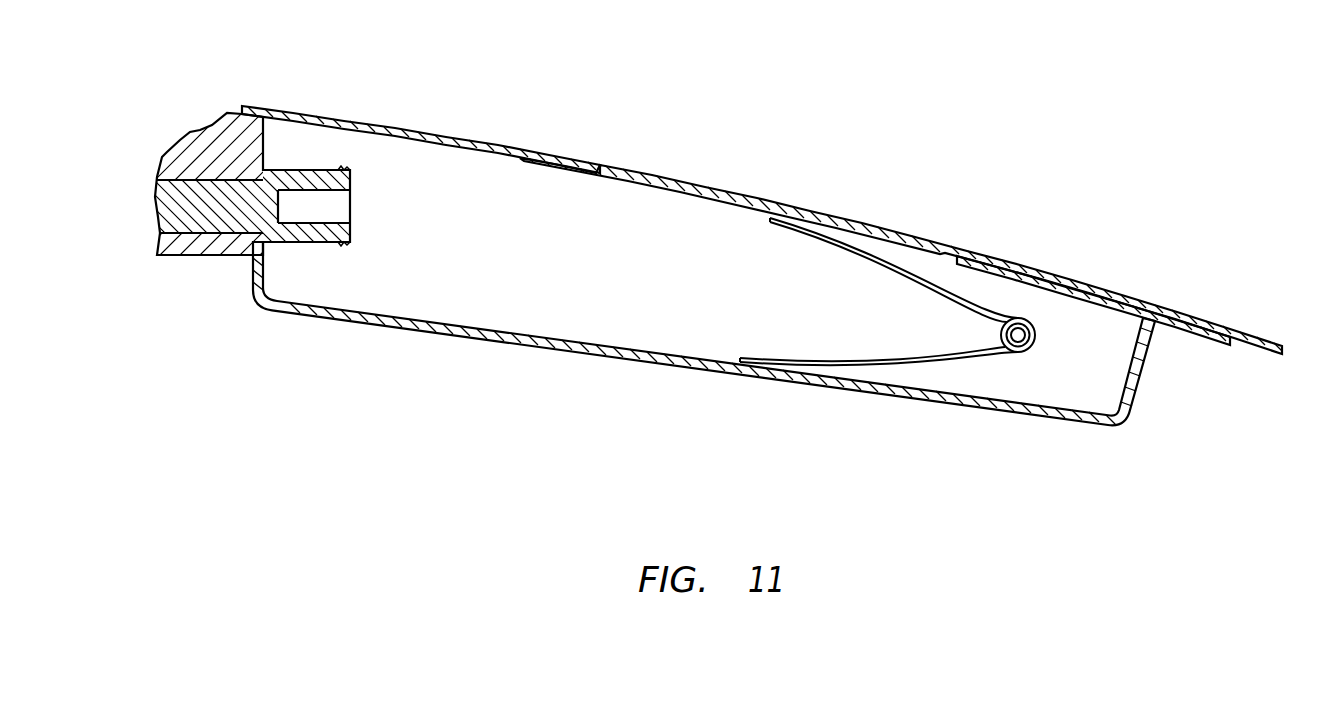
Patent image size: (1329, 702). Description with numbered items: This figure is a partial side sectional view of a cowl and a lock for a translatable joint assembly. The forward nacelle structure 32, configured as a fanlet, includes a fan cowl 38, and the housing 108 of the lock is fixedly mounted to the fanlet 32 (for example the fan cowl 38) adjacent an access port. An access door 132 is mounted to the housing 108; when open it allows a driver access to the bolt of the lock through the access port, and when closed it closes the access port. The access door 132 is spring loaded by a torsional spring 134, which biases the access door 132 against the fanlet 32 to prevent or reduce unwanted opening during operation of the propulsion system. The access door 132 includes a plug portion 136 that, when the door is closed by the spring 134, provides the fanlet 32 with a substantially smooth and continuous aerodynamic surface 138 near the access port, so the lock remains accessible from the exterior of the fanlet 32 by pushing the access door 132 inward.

The forward nacelle structure 32 is at (421, 99).
The fan cowl 38 is at (320, 107).
The aerodynamic surface 138 is at (475, 145).
The plug portion 136 is at (653, 174).
The access door 132 is at (818, 203).
The torsional spring 134 is at (1001, 335).
The housing 108 is at (531, 370).